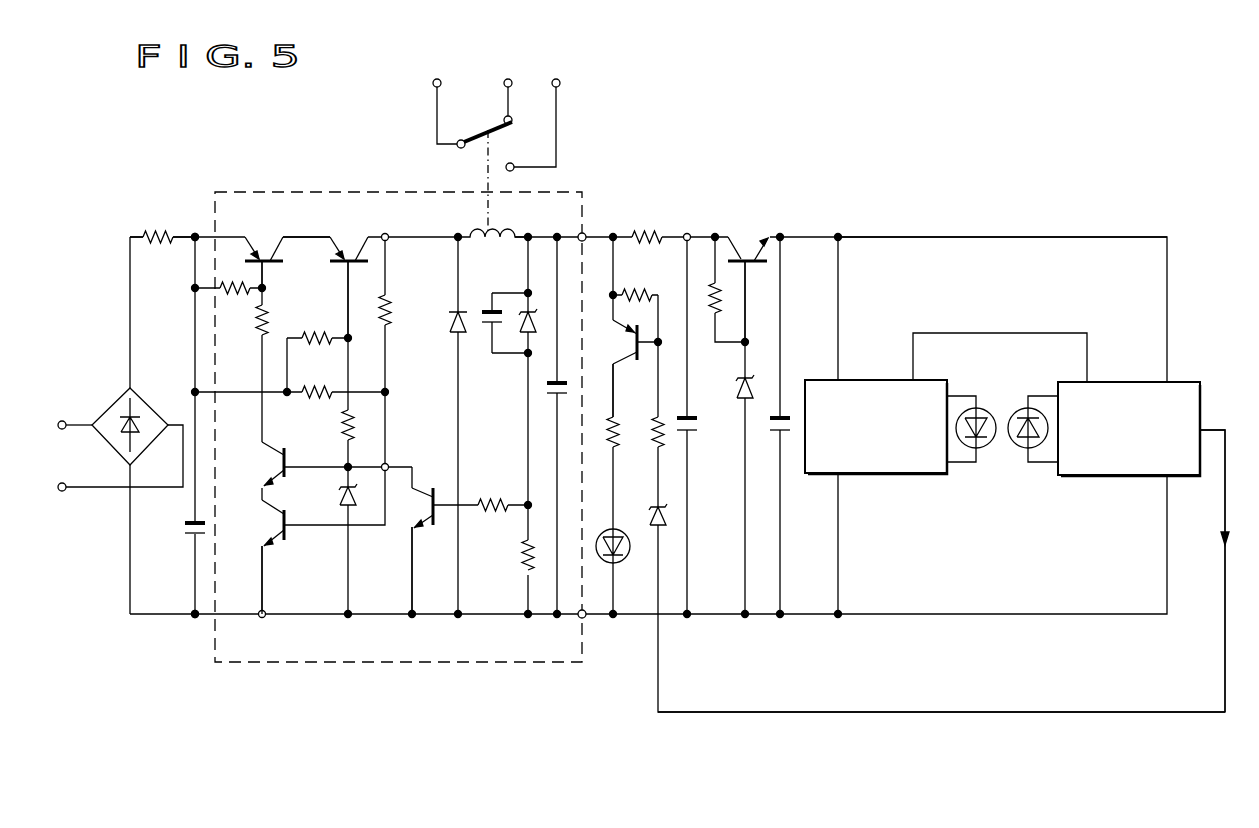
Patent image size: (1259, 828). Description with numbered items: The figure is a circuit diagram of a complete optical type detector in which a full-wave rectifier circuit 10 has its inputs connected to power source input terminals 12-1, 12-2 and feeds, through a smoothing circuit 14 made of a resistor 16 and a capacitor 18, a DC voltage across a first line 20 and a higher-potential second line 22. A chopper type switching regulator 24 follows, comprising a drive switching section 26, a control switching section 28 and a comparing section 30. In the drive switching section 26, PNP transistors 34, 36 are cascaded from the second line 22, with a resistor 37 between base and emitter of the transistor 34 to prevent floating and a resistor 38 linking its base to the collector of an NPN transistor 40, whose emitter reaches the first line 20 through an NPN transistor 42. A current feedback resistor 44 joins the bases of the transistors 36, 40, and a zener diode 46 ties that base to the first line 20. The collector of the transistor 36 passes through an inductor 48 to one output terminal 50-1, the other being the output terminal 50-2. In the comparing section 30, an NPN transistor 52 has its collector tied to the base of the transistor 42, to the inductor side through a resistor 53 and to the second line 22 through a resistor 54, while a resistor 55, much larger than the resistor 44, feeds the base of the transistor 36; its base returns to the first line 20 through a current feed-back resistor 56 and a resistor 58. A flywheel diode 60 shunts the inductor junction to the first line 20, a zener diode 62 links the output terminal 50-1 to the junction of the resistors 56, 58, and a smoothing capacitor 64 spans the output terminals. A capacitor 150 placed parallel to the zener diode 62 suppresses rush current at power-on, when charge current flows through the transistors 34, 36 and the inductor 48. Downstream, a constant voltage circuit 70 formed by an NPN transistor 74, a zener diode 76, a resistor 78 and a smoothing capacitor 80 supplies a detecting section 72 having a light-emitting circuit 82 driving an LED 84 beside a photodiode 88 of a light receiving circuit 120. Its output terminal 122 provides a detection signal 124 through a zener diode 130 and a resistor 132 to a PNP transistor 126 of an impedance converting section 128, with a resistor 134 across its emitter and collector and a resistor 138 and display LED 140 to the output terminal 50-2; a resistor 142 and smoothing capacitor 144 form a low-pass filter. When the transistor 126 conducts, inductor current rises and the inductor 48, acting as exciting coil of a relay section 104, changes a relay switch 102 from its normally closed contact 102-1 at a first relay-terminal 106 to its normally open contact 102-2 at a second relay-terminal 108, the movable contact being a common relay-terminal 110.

The full-wave rectifier circuit 10 is at (124, 392).
The power source input terminal 12-1 is at (62, 421).
The power source input terminal 12-2 is at (62, 491).
The smoothing circuit 14 is at (160, 232).
The resistor 16 is at (160, 244).
The capacitor 18 is at (185, 540).
The first line 20 is at (197, 618).
The second line 22 is at (197, 232).
The switching regulator 24 is at (453, 664).
The drive switching section 26 is at (308, 236).
The control switching section 28 is at (297, 540).
The comparing section 30 is at (482, 555).
The transistor 34 is at (268, 265).
The transistor 36 is at (344, 270).
The resistor 37 is at (238, 296).
The resistor 38 is at (258, 318).
The transistor 40 is at (276, 468).
The transistor 42 is at (276, 522).
The current feedback resistor 44 is at (343, 430).
The zener diode 46 is at (340, 495).
The inductor 48 is at (498, 242).
The output terminal 50-1 is at (579, 234).
The output terminal 50-2 is at (579, 618).
The transistor 52 is at (430, 494).
The resistor 53 is at (396, 322).
The resistor 54 is at (317, 387).
The resistor 55 is at (318, 334).
The current feed-back resistor 56 is at (490, 500).
The resistor 58 is at (524, 556).
The flywheel diode 60 is at (455, 336).
The zener diode 62 is at (522, 355).
The smoothing capacitor 64 is at (553, 404).
The constant voltage circuit 70 is at (758, 232).
The detecting section 72 is at (1012, 234).
The transistor 74 is at (754, 262).
The zener diode 76 is at (740, 388).
The resistor 78 is at (720, 295).
The smoothing capacitor 80 is at (774, 432).
The light-emitting circuit 82 is at (880, 475).
The light-emitting diode 84 is at (978, 456).
The photodiode 88 is at (1026, 456).
The relay switch 102 is at (472, 162).
The normally closed contact 102-1 is at (504, 119).
The normally open contact 102-2 is at (514, 170).
The relay section 104 is at (577, 133).
The first relay-terminal 106 is at (508, 79).
The second relay-terminal 108 is at (556, 79).
The common relay-terminal 110 is at (437, 79).
The light receiving circuit 120 is at (1106, 477).
The output terminal 122 is at (1206, 430).
The detection signal 124 is at (1224, 498).
The transistor 126 is at (650, 360).
The impedance converting section 128 is at (600, 342).
The zener diode 130 is at (668, 517).
The resistor 132 is at (664, 445).
The resistor 134 is at (640, 291).
The resistor 138 is at (620, 432).
The display LED 140 is at (620, 560).
The resistor 142 is at (648, 234).
The smoothing capacitor 144 is at (704, 422).
The capacitor 150 is at (488, 336).